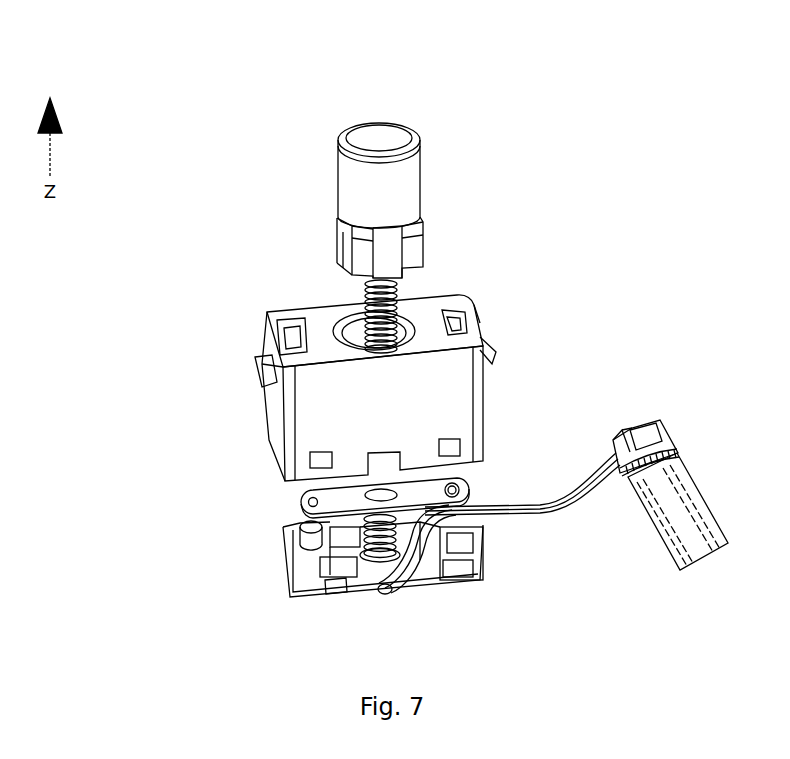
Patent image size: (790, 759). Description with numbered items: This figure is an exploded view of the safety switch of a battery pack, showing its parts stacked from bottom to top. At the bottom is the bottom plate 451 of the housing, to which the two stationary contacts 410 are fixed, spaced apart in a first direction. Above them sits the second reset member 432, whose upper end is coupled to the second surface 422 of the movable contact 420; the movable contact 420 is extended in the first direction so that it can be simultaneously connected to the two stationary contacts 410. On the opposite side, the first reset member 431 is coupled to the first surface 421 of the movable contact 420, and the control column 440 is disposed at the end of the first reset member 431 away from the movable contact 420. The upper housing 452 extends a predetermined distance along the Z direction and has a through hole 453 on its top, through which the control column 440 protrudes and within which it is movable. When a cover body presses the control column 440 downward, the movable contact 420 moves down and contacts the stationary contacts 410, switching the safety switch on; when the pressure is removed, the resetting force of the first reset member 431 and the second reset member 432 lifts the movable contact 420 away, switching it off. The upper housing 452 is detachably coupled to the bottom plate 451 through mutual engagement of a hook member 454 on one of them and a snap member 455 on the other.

The control column 440 is at (380, 137).
The first reset member 431 is at (400, 297).
The upper housing 452 is at (448, 403).
The through hole 453 is at (337, 326).
The snap member 455 is at (307, 453).
The movable contact 420 is at (296, 506).
The first surface 421 is at (460, 488).
The second surface 422 is at (470, 523).
The second reset member 432 is at (423, 580).
The stationary contact 410 is at (297, 528).
The hook member 454 is at (333, 594).
The bottom plate 451 is at (397, 597).